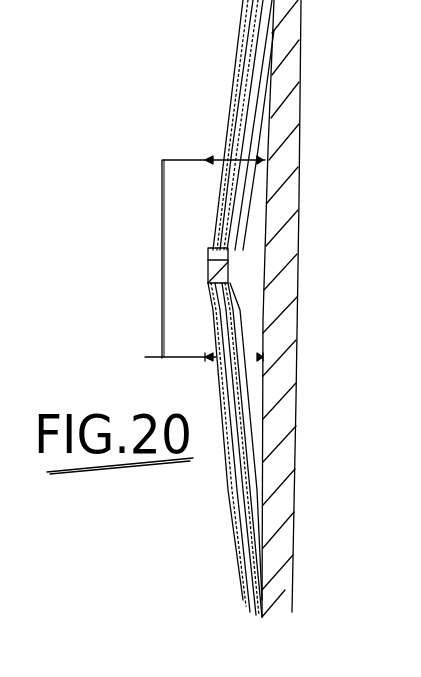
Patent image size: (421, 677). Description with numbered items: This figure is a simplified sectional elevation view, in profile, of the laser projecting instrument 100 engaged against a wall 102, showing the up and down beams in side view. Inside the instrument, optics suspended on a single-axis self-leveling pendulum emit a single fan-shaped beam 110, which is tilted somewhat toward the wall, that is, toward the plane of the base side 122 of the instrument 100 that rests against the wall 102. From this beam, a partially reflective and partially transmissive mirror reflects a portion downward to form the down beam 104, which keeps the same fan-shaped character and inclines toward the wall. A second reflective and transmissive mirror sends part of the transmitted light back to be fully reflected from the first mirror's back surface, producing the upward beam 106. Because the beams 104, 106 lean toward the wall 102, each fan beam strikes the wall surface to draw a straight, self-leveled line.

The laser projecting instrument 100 is at (163, 162).
The wall 102 is at (273, 251).
The down beam 104 is at (240, 490).
The upward beam 106 is at (253, 62).
The fan-shaped beam 110 is at (208, 252).
The base side 122 is at (229, 247).